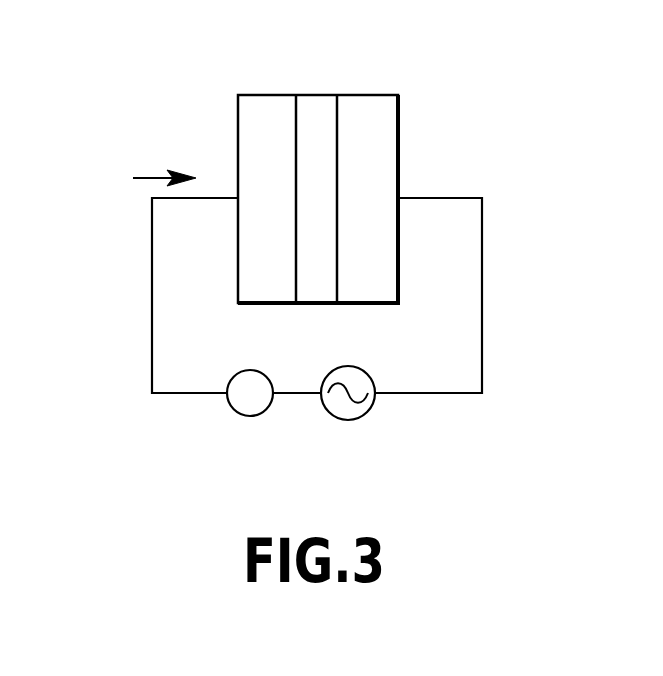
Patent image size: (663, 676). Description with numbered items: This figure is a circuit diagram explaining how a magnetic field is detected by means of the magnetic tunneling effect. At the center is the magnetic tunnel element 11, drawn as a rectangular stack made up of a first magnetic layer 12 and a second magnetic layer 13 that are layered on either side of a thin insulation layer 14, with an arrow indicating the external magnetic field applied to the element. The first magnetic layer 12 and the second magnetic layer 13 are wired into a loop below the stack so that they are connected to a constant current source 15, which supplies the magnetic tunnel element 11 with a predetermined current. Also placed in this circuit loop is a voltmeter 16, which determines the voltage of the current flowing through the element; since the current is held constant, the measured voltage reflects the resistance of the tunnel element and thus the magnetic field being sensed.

The magnetic tunnel element 11 is at (435, 138).
The first magnetic layer 12 is at (267, 115).
The second magnetic layer 13 is at (370, 112).
The insulation layer 14 is at (313, 105).
The constant current source 15 is at (363, 418).
The voltmeter 16 is at (243, 416).